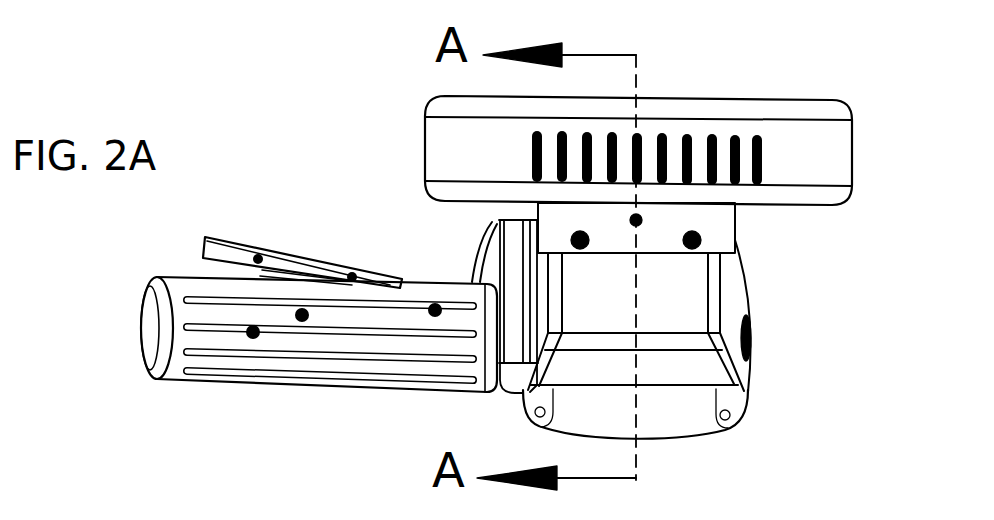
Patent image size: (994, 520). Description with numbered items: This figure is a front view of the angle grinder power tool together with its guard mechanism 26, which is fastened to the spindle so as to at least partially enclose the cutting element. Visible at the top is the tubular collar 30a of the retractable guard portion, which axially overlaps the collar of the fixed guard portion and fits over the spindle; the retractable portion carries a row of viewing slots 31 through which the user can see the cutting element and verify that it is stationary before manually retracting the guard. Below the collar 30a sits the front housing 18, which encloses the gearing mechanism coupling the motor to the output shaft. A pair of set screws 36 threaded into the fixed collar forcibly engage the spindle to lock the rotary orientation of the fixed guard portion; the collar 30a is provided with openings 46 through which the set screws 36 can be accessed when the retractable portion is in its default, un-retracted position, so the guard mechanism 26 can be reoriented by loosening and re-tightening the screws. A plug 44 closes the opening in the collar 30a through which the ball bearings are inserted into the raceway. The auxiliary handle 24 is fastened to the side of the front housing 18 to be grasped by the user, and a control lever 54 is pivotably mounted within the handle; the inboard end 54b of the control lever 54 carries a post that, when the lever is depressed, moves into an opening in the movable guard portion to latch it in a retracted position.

The front housing 18 is at (677, 317).
The auxiliary handle 24 is at (218, 383).
The guard mechanism 26 is at (343, 157).
The tubular collar 30a is at (660, 222).
The viewing slots 31 is at (765, 157).
The set screws 36 is at (585, 250).
The plug 44 is at (633, 220).
The openings 46 is at (736, 251).
The control lever 54 is at (282, 255).
The inboard end 54b is at (477, 251).